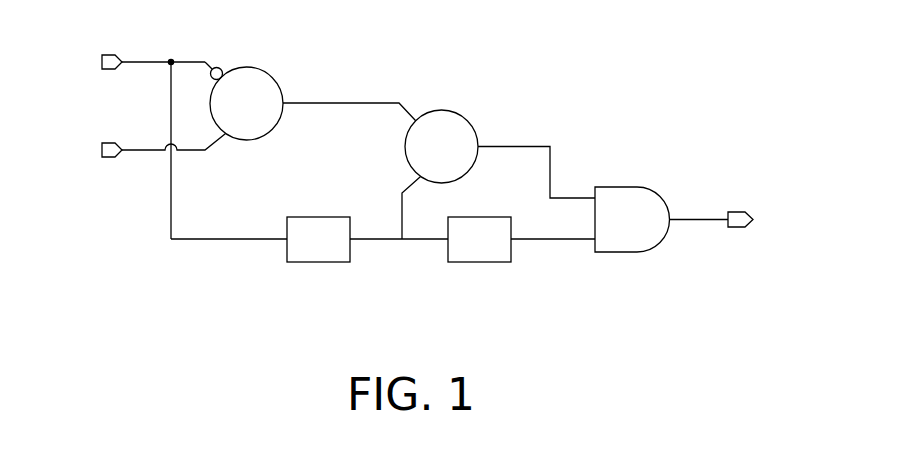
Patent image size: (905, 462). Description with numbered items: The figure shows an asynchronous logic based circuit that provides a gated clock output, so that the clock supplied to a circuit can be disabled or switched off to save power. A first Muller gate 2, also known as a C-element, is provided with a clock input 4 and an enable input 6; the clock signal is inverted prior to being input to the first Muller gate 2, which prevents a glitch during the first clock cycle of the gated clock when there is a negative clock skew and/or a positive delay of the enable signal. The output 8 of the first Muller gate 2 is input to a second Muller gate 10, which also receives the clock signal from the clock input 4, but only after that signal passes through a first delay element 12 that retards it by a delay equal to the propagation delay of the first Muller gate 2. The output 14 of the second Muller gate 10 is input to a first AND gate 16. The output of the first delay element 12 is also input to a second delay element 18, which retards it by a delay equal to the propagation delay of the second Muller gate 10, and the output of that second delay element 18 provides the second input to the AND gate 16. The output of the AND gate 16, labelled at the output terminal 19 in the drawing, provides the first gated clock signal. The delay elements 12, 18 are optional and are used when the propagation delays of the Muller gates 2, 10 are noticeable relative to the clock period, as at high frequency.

The first Muller gate 2 is at (243, 141).
The clock input 4 is at (108, 55).
The enable input 6 is at (107, 158).
The output of the first Muller gate 8 is at (383, 102).
The second Muller gate 10 is at (472, 172).
The first delay element 12 is at (318, 262).
The output of the second Muller gate 14 is at (516, 146).
The first AND gate 16 is at (621, 187).
The second delay element 18 is at (478, 262).
The output clock CLKG1 19 is at (704, 218).